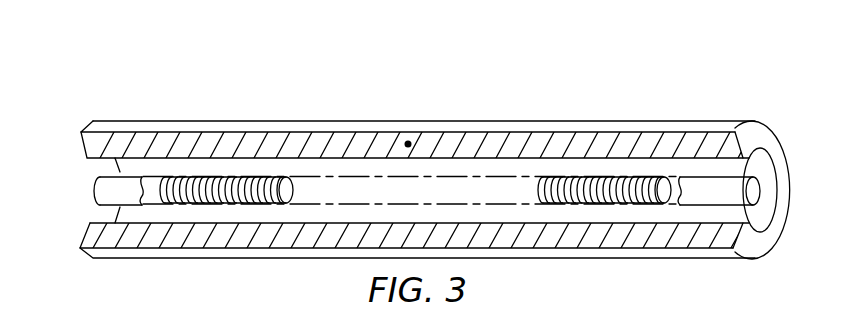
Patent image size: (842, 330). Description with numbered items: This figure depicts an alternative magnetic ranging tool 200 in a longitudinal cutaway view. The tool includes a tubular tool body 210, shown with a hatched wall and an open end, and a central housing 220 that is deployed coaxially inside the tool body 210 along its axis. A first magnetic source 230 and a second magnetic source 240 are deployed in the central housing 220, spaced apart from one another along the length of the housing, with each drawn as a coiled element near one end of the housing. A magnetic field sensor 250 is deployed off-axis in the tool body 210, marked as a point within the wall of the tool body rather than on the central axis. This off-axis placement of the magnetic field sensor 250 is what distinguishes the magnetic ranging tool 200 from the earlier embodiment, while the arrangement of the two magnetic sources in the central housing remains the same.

The magnetic ranging tool 200 is at (414, 146).
The tool body 210 is at (323, 121).
The central housing 220 is at (114, 169).
The first magnetic source 230 is at (207, 177).
The second magnetic source 240 is at (588, 177).
The magnetic field sensor 250 is at (408, 141).